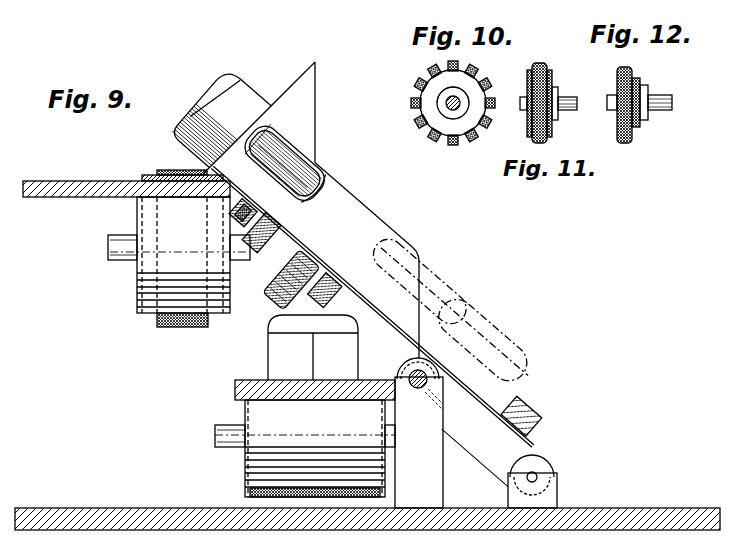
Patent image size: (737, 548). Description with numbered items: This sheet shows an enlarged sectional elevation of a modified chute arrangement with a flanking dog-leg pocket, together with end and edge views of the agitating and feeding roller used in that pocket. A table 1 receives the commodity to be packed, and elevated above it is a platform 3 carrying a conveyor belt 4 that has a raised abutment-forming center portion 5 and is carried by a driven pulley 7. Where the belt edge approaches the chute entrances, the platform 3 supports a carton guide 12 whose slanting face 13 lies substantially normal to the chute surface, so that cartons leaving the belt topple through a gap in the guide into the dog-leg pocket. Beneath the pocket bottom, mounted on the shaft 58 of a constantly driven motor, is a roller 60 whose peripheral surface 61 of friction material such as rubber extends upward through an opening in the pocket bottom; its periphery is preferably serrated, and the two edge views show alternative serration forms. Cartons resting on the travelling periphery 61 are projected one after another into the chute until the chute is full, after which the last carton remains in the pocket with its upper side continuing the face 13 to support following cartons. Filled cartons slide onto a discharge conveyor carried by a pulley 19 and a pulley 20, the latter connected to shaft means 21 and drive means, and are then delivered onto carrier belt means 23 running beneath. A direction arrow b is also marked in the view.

In FIG. 9, the table 1 is at (624, 509).
In FIG. 9, the platform 3 is at (57, 185).
In FIG. 9, the conveyor belt 4 is at (150, 176).
In FIG. 9, the raised abutment-forming center portion 5 is at (172, 171).
In FIG. 9, the pulley 7 is at (137, 220).
In FIG. 9, the carton guide 12 is at (316, 110).
In FIG. 9, the slanting face 13 is at (301, 76).
In FIG. 9, the pulley 19 is at (549, 470).
In FIG. 9, the pulley 20 is at (402, 369).
In FIG. 9, the shaft means 21 is at (418, 394).
In FIG. 9, the carrier belt means 23 is at (260, 380).
In FIG. 10, the shaft 58 is at (445, 100).
In FIG. 11, the shaft 58 is at (560, 112).
In FIG. 12, the shaft 58 is at (666, 97).
In FIG. 10, the roller 60 is at (426, 103).
In FIG. 11, the roller 60 is at (549, 75).
In FIG. 12, the roller 60 is at (637, 76).
In FIG. 10, the peripheral surface 61 is at (429, 131).
In FIG. 11, the peripheral surface 61 is at (541, 63).
In FIG. 12, the peripheral surface 61 is at (628, 143).
In FIG. 9, the direction arrow b is at (452, 185).